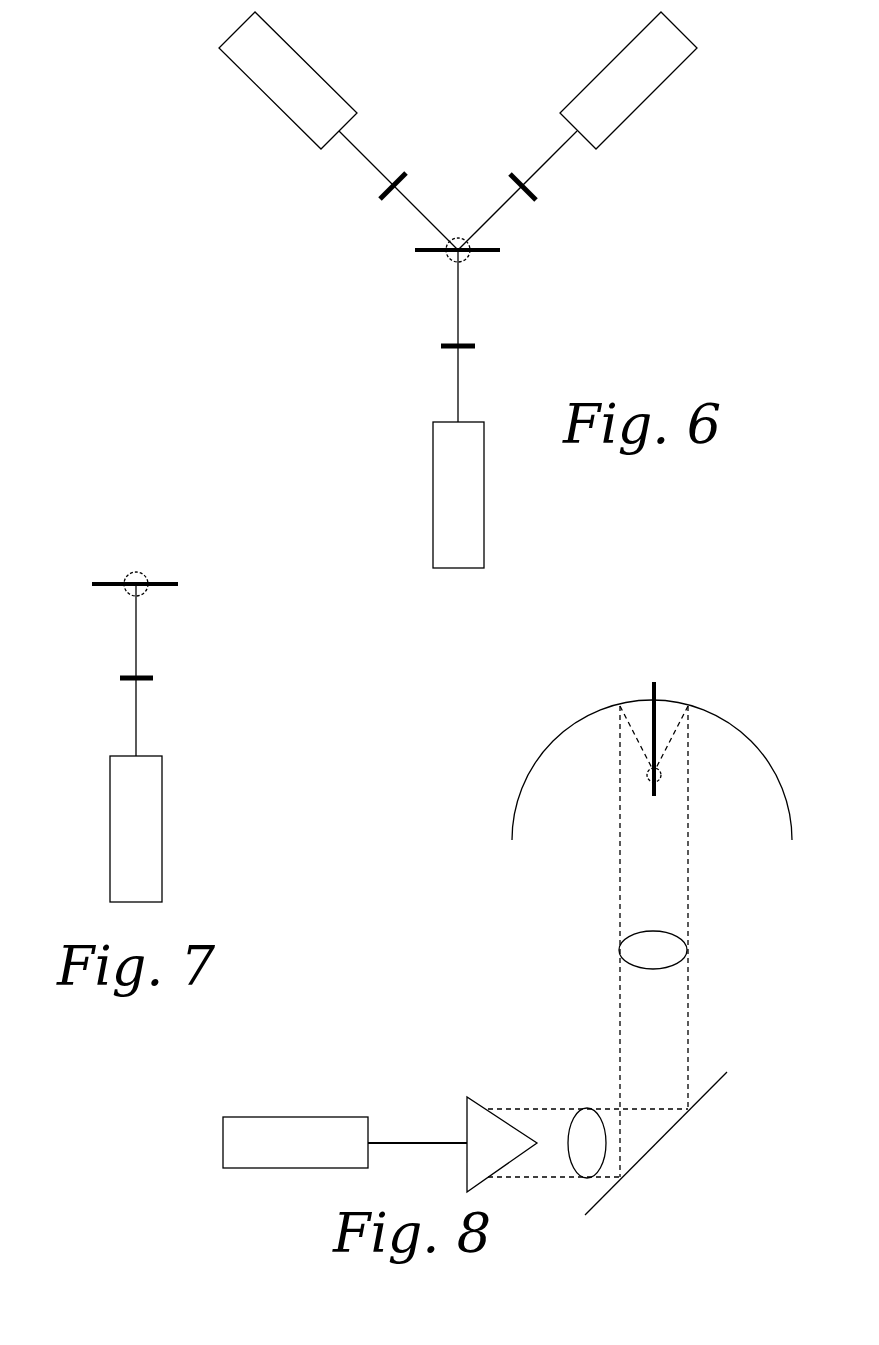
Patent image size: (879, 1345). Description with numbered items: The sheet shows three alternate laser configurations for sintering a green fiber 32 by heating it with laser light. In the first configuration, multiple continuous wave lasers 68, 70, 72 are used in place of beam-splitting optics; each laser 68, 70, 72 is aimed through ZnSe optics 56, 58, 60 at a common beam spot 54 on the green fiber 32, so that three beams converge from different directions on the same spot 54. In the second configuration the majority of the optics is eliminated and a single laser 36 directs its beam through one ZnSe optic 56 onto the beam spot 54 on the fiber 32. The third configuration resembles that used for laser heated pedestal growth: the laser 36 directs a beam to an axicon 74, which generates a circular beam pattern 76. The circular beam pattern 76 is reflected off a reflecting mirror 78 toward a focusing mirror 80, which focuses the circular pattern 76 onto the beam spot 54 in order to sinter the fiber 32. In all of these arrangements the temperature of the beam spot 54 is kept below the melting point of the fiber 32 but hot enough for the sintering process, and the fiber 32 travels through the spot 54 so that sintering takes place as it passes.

In FIG. 6, the green fiber 32 is at (480, 252).
In FIG. 7, the green fiber 32 is at (160, 587).
In FIG. 8, the green fiber 32 is at (657, 693).
In FIG. 7, the CO2 laser 36 is at (110, 812).
In FIG. 8, the CO2 laser 36 is at (308, 1117).
In FIG. 6, the beam spot 54 is at (462, 239).
In FIG. 7, the beam spot 54 is at (135, 571).
In FIG. 8, the beam spot 54 is at (651, 782).
In FIG. 6, the ZnSe optics 56 is at (440, 345).
In FIG. 7, the ZnSe optics 56 is at (113, 677).
In FIG. 6, the ZnSe optics 58 is at (537, 199).
In FIG. 6, the ZnSe optics 60 is at (380, 198).
In FIG. 6, the laser 68 is at (433, 482).
In FIG. 6, the laser 70 is at (655, 97).
In FIG. 6, the laser 72 is at (305, 60).
In FIG. 8, the axicon 74 is at (475, 1095).
In FIG. 8, the circular beam pattern 76 is at (637, 933).
In FIG. 8, the reflecting mirror 78 is at (673, 1125).
In FIG. 8, the focusing mirror 80 is at (588, 715).